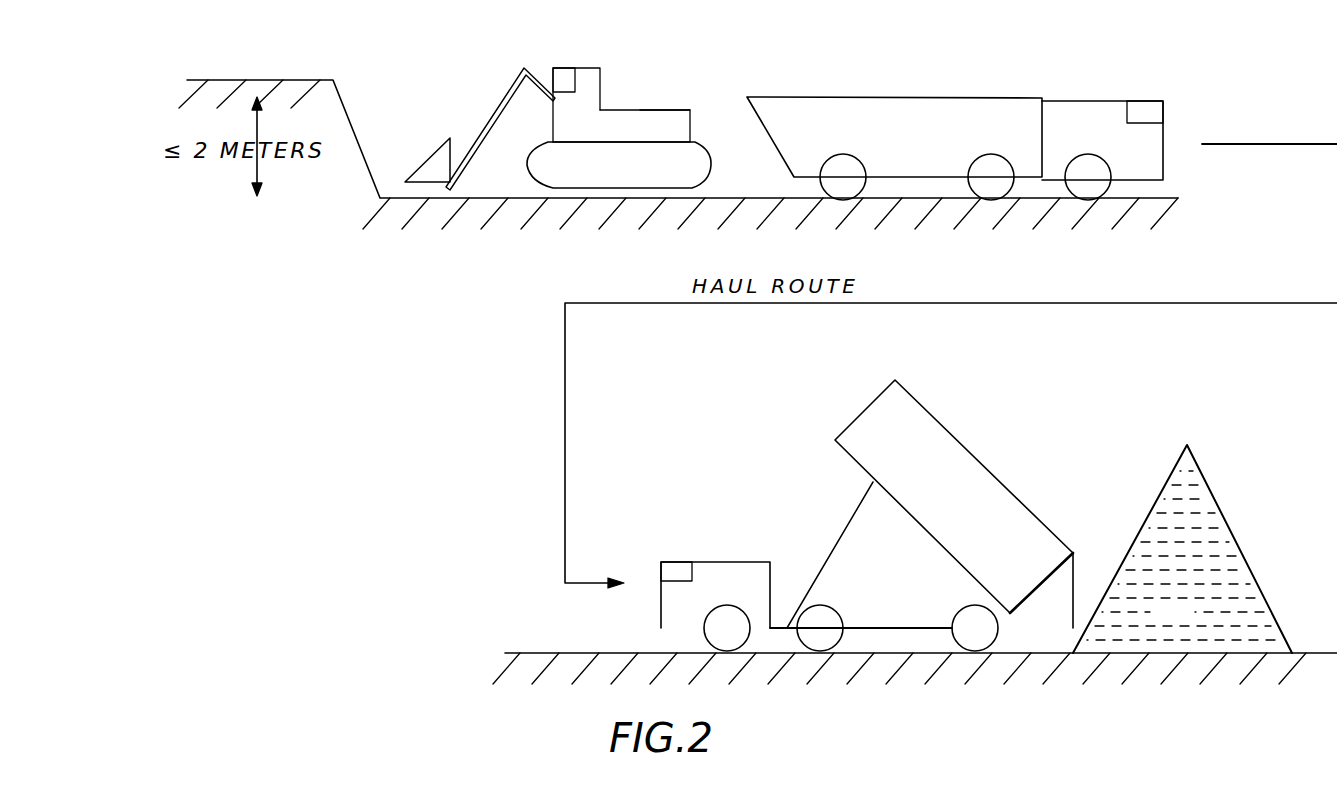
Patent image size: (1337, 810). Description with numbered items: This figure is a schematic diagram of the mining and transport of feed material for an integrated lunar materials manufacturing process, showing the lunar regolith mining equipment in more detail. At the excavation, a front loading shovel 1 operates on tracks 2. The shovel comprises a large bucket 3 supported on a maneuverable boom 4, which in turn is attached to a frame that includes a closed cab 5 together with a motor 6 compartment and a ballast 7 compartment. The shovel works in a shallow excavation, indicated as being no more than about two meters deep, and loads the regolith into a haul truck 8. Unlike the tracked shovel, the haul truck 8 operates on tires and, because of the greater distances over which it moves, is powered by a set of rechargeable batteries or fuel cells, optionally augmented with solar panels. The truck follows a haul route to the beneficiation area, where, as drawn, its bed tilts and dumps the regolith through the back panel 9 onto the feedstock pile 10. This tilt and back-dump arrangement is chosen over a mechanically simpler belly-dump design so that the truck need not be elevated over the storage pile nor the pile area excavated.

The front loading shovel 1 is at (578, 59).
The tracks 2 is at (617, 183).
The bucket 3 is at (425, 160).
The boom 4 is at (490, 120).
The closed cab 5 is at (587, 102).
The motor compartment 6 is at (625, 122).
The ballast compartment 7 is at (677, 112).
The haul truck 8 is at (919, 142).
The back panel 9 is at (1043, 582).
The feedstock pile 10 is at (1182, 549).